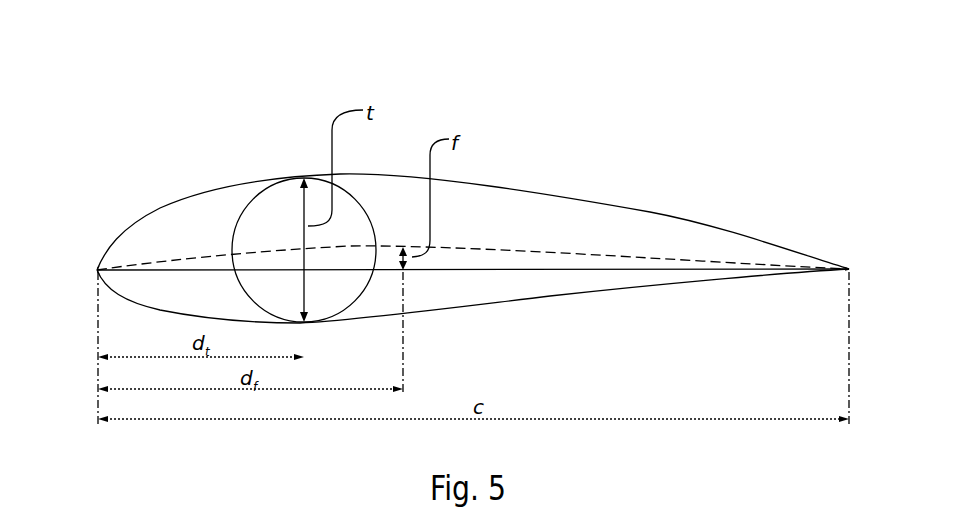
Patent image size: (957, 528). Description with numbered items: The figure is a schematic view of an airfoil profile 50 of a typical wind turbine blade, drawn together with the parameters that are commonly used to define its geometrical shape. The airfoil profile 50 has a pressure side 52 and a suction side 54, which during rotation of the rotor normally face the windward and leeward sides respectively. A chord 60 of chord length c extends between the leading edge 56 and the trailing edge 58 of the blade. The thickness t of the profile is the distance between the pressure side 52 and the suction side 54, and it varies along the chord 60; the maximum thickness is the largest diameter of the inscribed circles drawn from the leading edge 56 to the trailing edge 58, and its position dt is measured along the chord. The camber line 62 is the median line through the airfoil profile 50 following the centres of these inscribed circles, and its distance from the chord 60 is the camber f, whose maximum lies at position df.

The airfoil profile 50 is at (457, 202).
The pressure side 52 is at (621, 291).
The suction side 54 is at (563, 195).
The leading edge 56 is at (97, 270).
The trailing edge 58 is at (849, 268).
The chord 60 is at (658, 268).
The camber line 62 is at (463, 247).